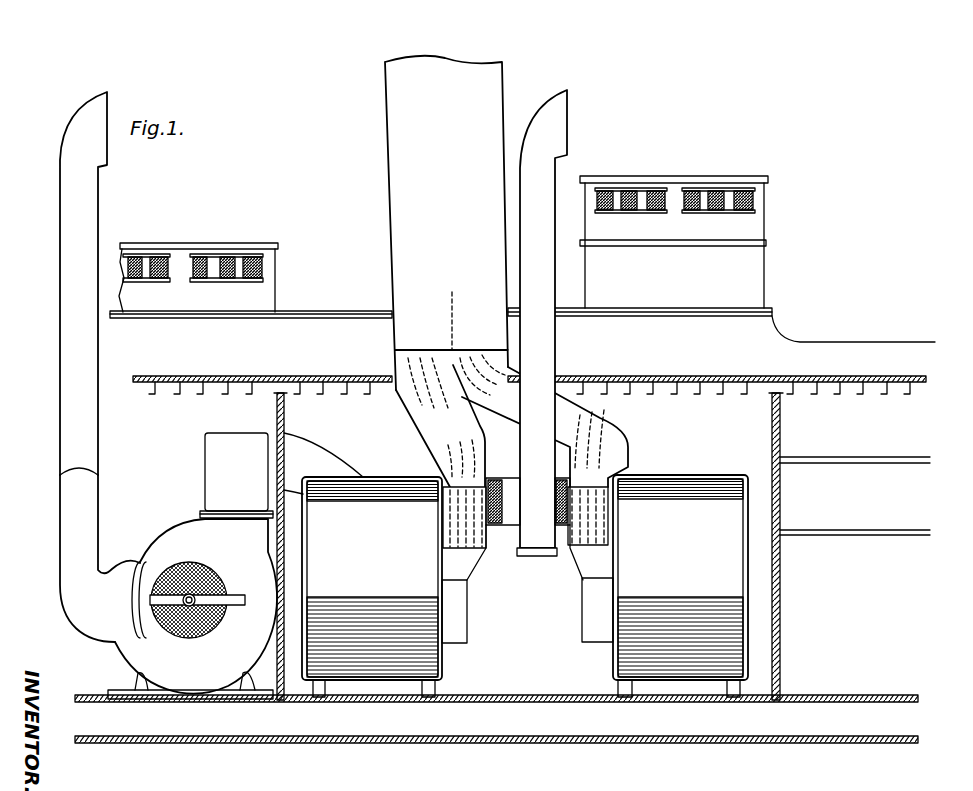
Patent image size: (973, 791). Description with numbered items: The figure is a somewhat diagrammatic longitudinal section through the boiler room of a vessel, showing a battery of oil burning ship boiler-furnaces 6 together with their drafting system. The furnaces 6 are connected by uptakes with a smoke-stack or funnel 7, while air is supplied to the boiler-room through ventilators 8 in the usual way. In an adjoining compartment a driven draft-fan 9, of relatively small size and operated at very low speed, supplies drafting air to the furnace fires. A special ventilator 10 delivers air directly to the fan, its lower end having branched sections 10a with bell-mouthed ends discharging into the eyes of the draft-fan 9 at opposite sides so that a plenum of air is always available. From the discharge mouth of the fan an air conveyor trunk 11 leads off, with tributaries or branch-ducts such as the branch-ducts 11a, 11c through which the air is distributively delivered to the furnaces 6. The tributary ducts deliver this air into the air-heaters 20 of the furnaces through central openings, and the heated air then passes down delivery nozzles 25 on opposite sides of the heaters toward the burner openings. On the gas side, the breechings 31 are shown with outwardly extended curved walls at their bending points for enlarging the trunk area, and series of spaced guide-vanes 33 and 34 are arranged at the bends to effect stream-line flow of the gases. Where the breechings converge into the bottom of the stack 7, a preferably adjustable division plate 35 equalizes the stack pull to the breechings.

The ship boiler-furnace 6 is at (750, 560).
The smoke-stack 7 is at (392, 205).
The ventilator 8 is at (545, 199).
The draft-fan 9 is at (162, 545).
The special ventilator 10 is at (60, 258).
The branched section 10a is at (67, 500).
The air conveyor trunk 11 is at (210, 452).
The branch-duct 11a is at (488, 530).
The branch-duct 11c is at (517, 547).
The air-heater 20 is at (467, 517).
The delivery nozzle 25 is at (467, 613).
The breeching 31 is at (485, 447).
The guide-vane 33 is at (450, 452).
The guide-vane 34 is at (497, 401).
The division plate 35 is at (453, 306).